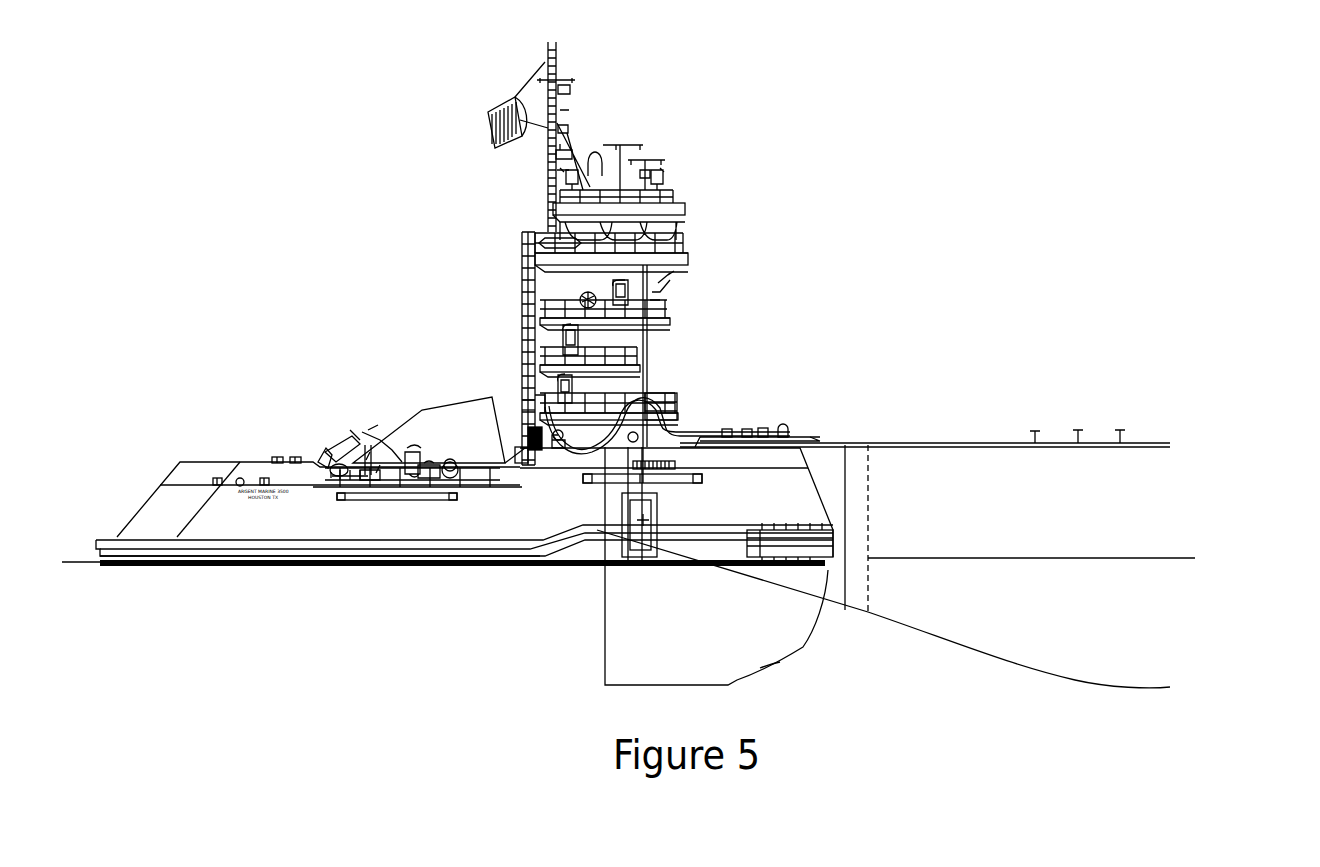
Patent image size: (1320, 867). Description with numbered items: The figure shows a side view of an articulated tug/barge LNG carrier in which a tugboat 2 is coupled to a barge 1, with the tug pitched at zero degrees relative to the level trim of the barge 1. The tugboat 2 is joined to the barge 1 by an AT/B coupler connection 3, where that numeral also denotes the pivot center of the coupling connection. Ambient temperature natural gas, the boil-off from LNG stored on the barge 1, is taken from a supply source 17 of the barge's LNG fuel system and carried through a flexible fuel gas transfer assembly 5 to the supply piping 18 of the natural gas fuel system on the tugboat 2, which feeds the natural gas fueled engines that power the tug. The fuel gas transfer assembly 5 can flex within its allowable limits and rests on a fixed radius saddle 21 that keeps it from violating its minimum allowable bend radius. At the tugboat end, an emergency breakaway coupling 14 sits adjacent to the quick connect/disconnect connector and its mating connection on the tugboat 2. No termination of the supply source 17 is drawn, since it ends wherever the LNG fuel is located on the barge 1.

The barge 1 is at (987, 443).
The tugboat 2 is at (453, 422).
The AT/B coupler connection 3 is at (640, 528).
The fuel gas transfer assembly 5 is at (650, 400).
The emergency breakaway coupling 14 is at (537, 410).
The supply source 17 is at (817, 435).
The supply piping 18 is at (527, 413).
The fixed radius saddle 21 is at (673, 398).